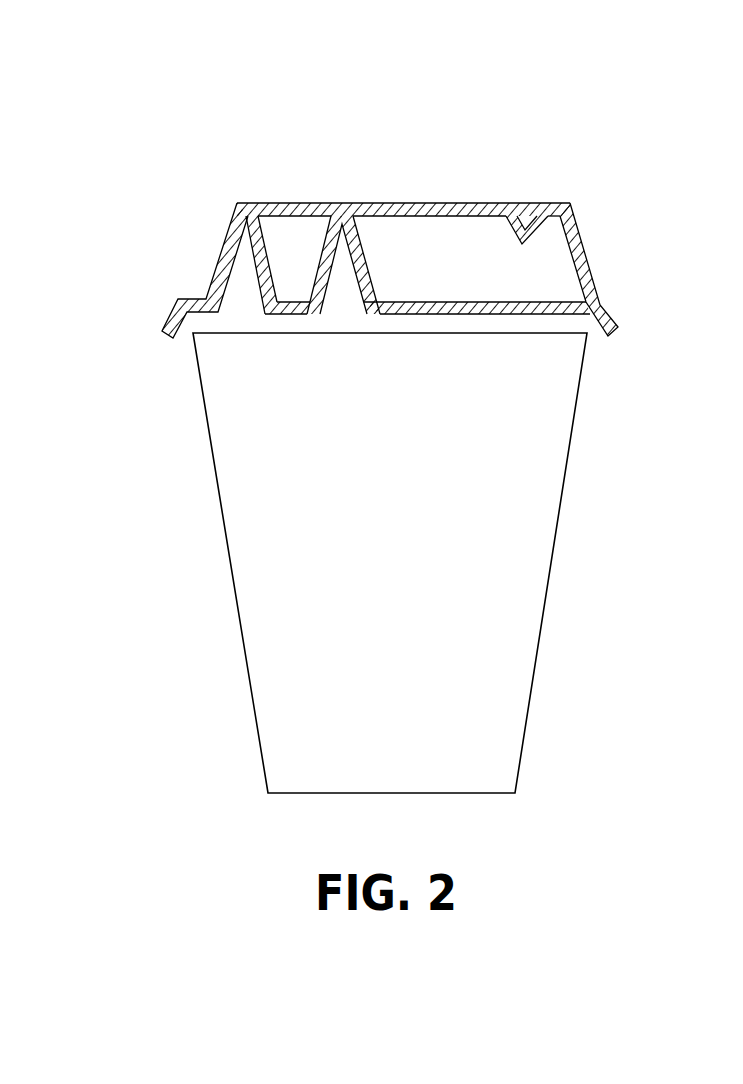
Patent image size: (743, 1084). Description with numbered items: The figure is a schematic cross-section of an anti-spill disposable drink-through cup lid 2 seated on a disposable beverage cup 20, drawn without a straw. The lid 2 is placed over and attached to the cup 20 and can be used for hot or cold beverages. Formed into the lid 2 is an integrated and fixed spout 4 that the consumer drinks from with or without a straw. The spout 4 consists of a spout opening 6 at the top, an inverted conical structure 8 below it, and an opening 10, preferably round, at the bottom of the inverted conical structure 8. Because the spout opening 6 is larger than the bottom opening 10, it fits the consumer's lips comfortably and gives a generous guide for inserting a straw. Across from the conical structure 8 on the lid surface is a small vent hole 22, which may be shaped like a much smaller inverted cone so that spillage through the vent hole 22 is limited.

The anti-spill disposable drink-through cup lid 2 is at (602, 232).
The integrated spout 4 is at (287, 258).
The spout opening 6 is at (315, 188).
The inverted conical structure 8 is at (250, 290).
The opening 10 is at (295, 322).
The disposable beverage cup 20 is at (538, 638).
The vent hole 22 is at (533, 198).